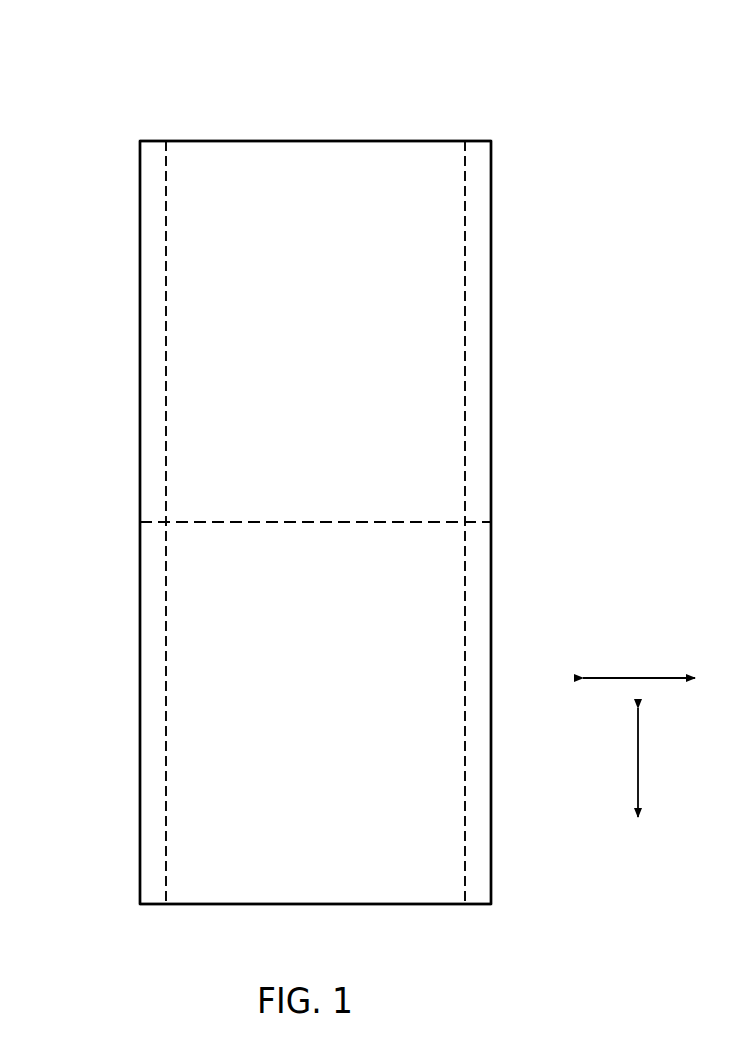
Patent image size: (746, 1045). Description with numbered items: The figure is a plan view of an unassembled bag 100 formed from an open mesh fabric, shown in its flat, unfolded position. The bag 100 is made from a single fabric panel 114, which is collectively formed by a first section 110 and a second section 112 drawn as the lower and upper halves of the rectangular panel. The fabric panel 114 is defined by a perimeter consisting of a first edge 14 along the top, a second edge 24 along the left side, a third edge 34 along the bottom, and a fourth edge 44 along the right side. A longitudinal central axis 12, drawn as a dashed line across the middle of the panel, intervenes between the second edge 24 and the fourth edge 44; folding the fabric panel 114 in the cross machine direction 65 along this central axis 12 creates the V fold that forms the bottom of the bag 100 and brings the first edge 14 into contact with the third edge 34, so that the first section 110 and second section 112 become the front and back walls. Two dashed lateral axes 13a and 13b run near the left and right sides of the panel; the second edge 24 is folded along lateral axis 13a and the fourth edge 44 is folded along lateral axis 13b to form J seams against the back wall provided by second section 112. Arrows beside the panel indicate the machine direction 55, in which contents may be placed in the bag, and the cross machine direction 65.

The bag 100 is at (91, 104).
The first edge 14 is at (225, 141).
The third edge 34 is at (225, 904).
The second edge 24 is at (140, 366).
The fourth edge 44 is at (491, 367).
The lateral axis 13a is at (166, 272).
The lateral axis 13b is at (465, 272).
The longitudinal central axis 12 is at (387, 522).
The second section 112 is at (334, 327).
The first section 110 is at (336, 710).
The fabric panel 114 is at (306, 139).
The machine direction 55 is at (637, 678).
The cross machine direction 65 is at (638, 768).